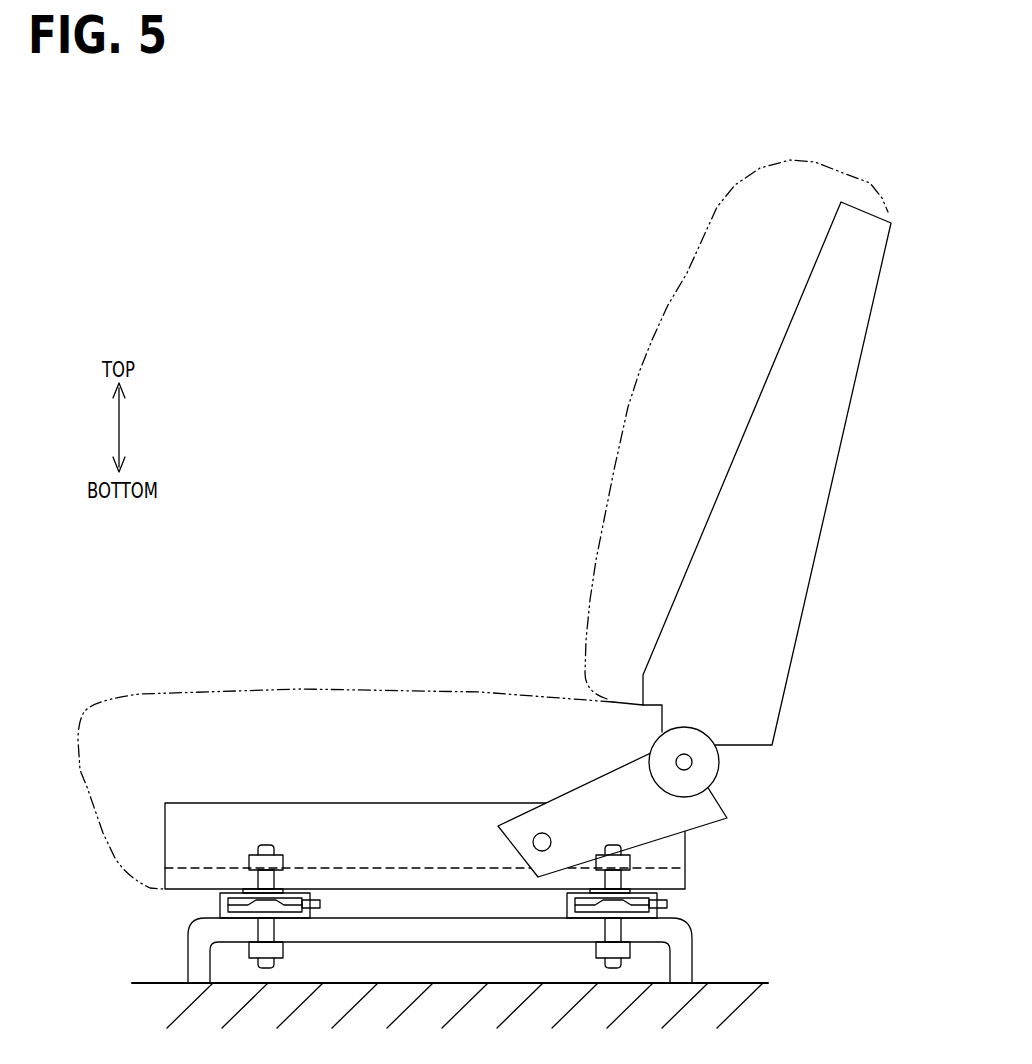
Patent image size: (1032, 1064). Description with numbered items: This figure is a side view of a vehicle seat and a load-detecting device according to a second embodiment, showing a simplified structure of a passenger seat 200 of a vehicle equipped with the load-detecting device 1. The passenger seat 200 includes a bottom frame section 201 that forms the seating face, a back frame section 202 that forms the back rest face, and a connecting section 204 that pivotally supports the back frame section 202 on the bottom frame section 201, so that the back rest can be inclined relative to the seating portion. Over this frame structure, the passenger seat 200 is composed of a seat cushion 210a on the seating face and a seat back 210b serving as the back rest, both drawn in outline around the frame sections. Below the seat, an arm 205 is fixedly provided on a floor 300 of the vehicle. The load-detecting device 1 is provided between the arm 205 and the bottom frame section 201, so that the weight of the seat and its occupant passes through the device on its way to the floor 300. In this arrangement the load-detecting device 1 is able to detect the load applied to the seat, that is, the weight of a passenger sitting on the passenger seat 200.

The passenger seat 200 is at (399, 204).
The bottom frame section 201 is at (280, 820).
The back frame section 202 is at (780, 668).
The connecting section 204 is at (710, 763).
The arm 205 is at (685, 958).
The seat cushion 210a is at (467, 708).
The seat back 210b is at (653, 385).
The load-detecting device 1 is at (203, 907).
The floor 300 is at (763, 1015).